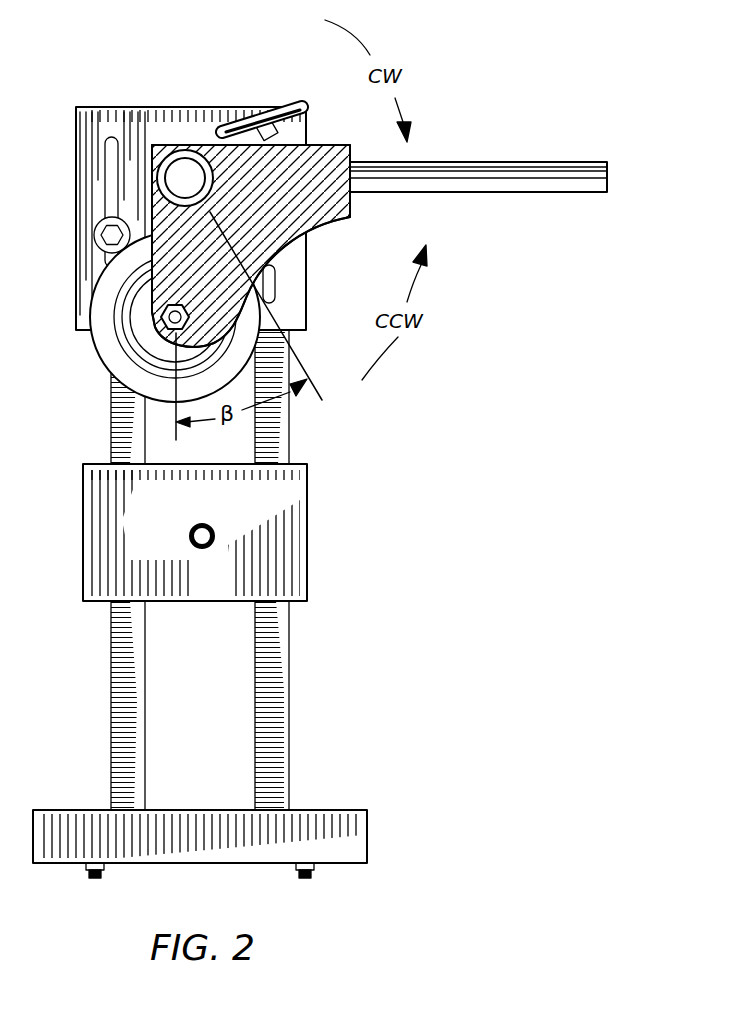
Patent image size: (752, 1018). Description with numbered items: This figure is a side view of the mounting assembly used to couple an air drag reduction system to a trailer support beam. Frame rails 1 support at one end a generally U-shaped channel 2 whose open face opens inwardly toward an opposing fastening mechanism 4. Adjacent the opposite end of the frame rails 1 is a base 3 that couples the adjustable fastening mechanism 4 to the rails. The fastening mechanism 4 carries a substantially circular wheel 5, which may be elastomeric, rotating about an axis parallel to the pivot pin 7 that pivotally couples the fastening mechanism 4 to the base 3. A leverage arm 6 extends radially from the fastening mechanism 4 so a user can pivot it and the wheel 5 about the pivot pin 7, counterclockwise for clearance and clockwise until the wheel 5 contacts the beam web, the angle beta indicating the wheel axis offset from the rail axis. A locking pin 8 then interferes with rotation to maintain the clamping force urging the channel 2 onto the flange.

The frame rails 1 is at (277, 697).
The channel 2 is at (357, 853).
The base 3 is at (191, 218).
The fastening mechanism 4 is at (317, 228).
The wheel 5 is at (102, 338).
The leverage arm 6 is at (587, 183).
The pivot pin 7 is at (180, 172).
The locking pin 8 is at (255, 118).